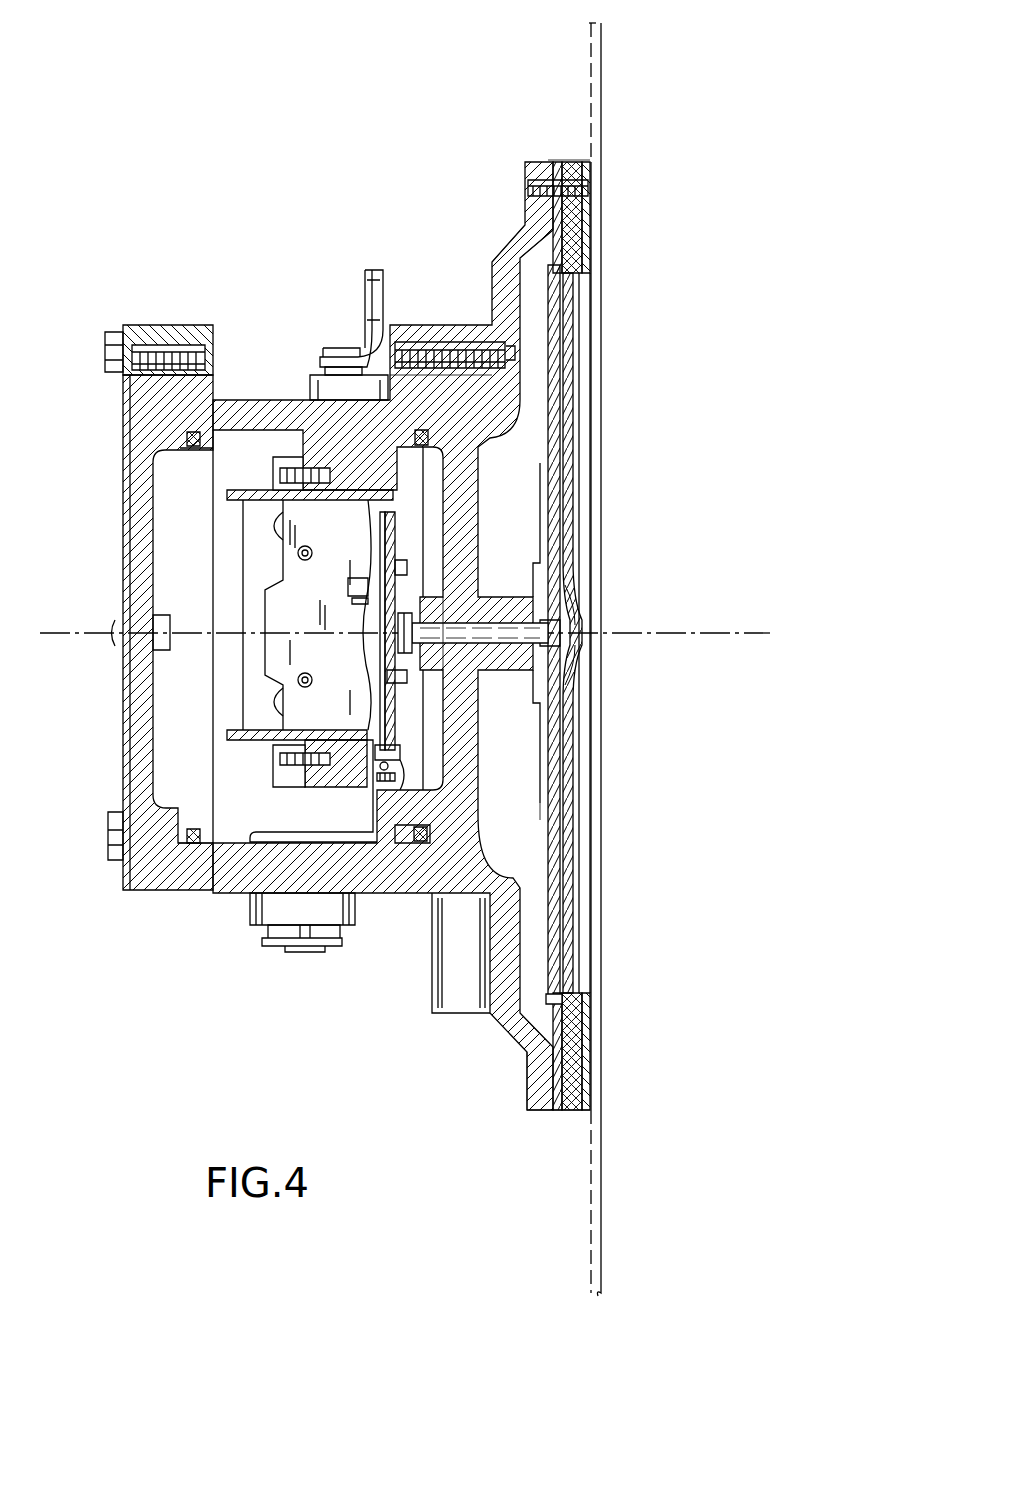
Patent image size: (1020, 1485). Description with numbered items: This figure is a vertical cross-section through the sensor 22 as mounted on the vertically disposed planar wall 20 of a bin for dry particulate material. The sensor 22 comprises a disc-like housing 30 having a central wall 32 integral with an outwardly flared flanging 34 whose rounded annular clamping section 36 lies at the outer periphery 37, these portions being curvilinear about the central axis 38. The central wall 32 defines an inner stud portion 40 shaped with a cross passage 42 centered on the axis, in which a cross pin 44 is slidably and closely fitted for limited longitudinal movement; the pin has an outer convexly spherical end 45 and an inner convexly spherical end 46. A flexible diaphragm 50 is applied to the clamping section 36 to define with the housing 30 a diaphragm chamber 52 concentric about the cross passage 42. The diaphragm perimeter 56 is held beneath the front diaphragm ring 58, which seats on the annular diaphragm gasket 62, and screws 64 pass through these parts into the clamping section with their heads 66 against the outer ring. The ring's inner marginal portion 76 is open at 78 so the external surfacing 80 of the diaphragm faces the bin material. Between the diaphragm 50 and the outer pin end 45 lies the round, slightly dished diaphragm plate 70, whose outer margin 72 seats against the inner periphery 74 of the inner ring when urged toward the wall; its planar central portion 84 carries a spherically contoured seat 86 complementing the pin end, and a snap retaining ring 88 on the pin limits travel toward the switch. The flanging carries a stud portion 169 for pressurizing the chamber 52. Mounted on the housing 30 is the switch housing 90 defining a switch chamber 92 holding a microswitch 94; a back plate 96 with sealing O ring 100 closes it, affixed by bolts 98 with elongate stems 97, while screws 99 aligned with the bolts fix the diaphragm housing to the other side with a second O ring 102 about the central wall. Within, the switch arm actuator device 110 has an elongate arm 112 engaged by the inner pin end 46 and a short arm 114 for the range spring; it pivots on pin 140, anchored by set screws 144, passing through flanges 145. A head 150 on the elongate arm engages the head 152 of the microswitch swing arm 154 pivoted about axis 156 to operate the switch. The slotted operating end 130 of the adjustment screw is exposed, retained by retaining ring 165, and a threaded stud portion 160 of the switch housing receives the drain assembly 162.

The wall 20 is at (580, 44).
The sensor 22 is at (493, 190).
The housing 30 is at (470, 262).
The central wall 32 is at (455, 322).
The flanging 34 is at (490, 206).
The clamping section 36 is at (535, 1112).
The outer periphery 37 is at (548, 1114).
The central axis 38 is at (740, 630).
The inner stud portion 40 is at (533, 597).
The cross passage 42 is at (493, 625).
The cross pin 44 is at (567, 690).
The outer end 45 is at (570, 626).
The inner end 46 is at (406, 614).
The diaphragm 50 is at (565, 157).
The diaphragm chamber 52 is at (517, 465).
The perimeter 56 is at (573, 155).
The front diaphragm ring 58 is at (585, 248).
The diaphragm gasket 62 is at (558, 160).
The screws 64 is at (546, 160).
The heads 66 is at (592, 170).
The diaphragm plate 70 is at (545, 436).
The outer margin 72 is at (552, 1014).
The inner periphery 74 is at (558, 1035).
The inner marginal portion 76 is at (583, 282).
The opening 78 is at (560, 314).
The external surfacing 80 is at (580, 493).
The central portion 84 is at (553, 822).
The spherically contoured seat 86 is at (582, 660).
The retaining ring 88 is at (570, 612).
The switch housing 90 is at (200, 898).
The switch chamber 92 is at (232, 770).
The microswitch 94 is at (232, 598).
The back plate 96 is at (140, 425).
The stems 97 is at (158, 345).
The bolts 98 is at (113, 340).
The screws 99 is at (437, 345).
The sealing O ring 100 is at (192, 442).
The second sealing O ring 102 is at (419, 846).
The switch arm actuator device 110 is at (414, 737).
The elongate arm 112 is at (402, 702).
The short arm 114 is at (380, 752).
The slotted operating end 130 is at (334, 355).
The pin 140 is at (368, 752).
The set screws 144 is at (412, 845).
The flanges 145 is at (408, 792).
The head 150 is at (398, 672).
The head 152 is at (372, 665).
The microswitch swing arm 154 is at (372, 608).
The axis 156 is at (362, 550).
The threaded stud portion 160 is at (268, 912).
The drain assembly 162 is at (266, 950).
The retaining ring 165 is at (316, 360).
The stud portion 169 is at (456, 1003).